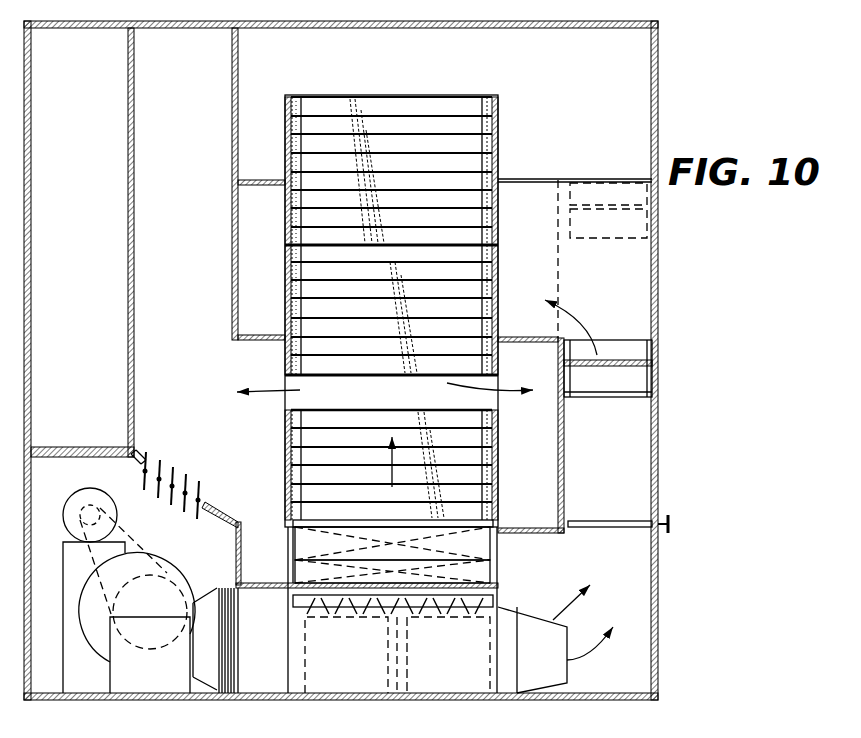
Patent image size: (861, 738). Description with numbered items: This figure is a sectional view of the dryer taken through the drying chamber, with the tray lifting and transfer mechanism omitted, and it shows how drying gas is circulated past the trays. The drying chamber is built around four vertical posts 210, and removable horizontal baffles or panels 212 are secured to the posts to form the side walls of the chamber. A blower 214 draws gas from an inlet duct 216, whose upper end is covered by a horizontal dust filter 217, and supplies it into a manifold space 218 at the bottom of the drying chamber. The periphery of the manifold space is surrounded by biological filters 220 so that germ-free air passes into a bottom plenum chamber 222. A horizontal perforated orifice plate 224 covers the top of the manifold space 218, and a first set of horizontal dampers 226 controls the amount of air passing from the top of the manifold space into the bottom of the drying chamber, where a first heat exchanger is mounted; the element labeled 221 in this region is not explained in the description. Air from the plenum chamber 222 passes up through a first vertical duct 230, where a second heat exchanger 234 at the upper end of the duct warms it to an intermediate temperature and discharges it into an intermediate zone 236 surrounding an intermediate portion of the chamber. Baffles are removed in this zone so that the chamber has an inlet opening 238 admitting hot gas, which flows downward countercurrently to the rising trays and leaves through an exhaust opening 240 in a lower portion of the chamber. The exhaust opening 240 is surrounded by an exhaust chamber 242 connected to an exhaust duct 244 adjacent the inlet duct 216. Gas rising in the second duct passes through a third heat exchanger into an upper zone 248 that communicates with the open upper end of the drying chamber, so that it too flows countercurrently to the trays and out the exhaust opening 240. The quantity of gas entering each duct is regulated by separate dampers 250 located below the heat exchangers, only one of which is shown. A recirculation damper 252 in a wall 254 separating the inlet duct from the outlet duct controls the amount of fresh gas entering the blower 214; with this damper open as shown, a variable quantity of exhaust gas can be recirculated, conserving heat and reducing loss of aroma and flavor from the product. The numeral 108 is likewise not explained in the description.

The air treatment unit 108 is at (277, 143).
The vertical posts 210 is at (291, 118).
The horizontal baffles 212 is at (372, 148).
The blower 214 is at (188, 583).
The inlet duct 216 is at (51, 231).
The horizontal dust filter 217 is at (72, 32).
The manifold space 218 is at (326, 666).
The biological filters 220 is at (567, 627).
The heating unit 221 is at (473, 542).
The bottom plenum chamber 222 is at (596, 568).
The horizontal perforated orifice plate 224 is at (490, 586).
The first set of horizontal dampers 226 is at (430, 610).
The first vertical duct 230 is at (584, 464).
The second heat exchanger 234 is at (620, 352).
The intermediate zone 236 is at (248, 283).
The inlet opening 238 is at (285, 247).
The exhaust opening 240 is at (369, 406).
The exhaust chamber 242 is at (513, 441).
The exhaust duct 244 is at (158, 269).
The upper zone 248 is at (576, 89).
The dampers 250 is at (623, 525).
The recirculation damper 252 is at (187, 470).
The wall 254 is at (227, 507).